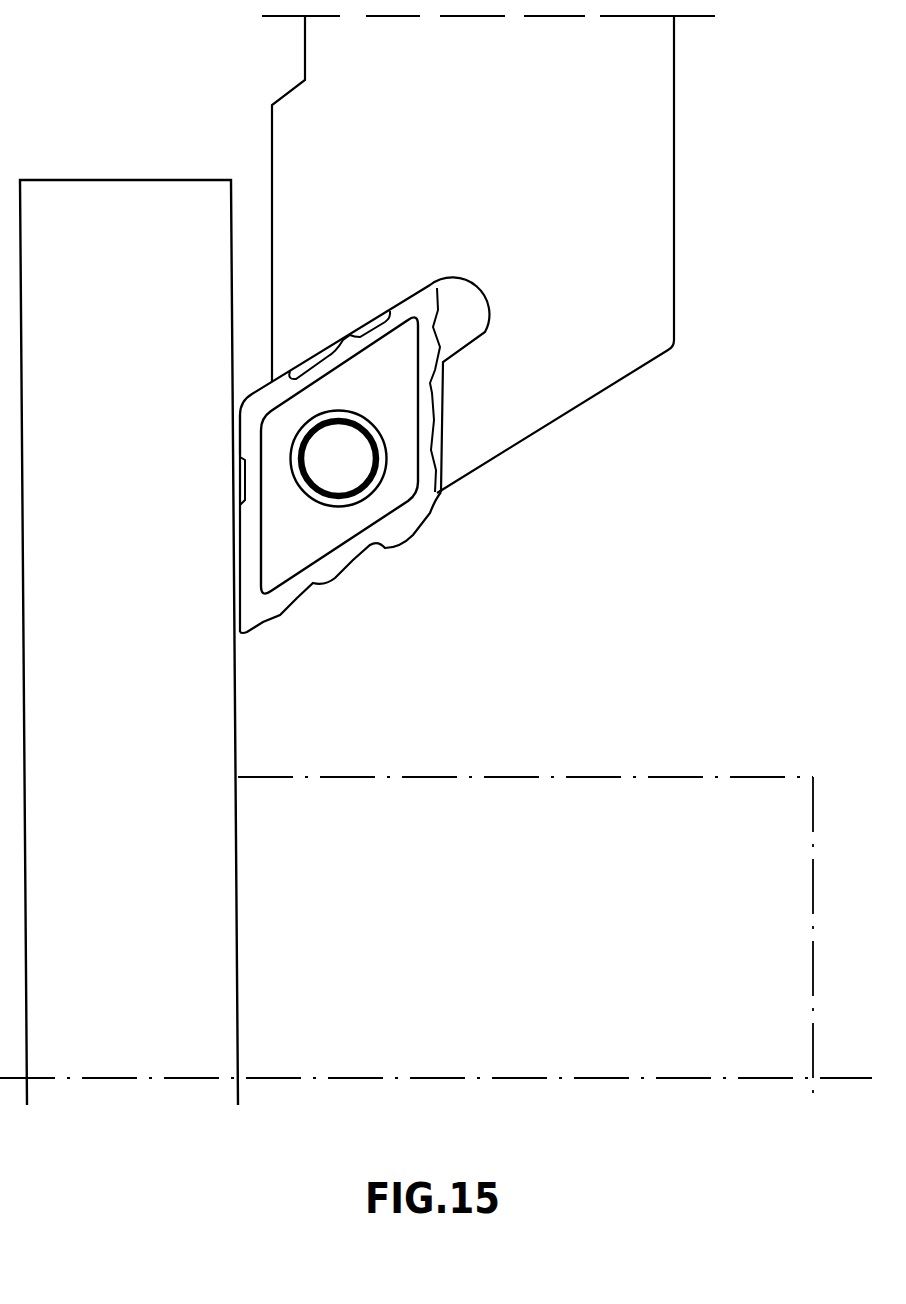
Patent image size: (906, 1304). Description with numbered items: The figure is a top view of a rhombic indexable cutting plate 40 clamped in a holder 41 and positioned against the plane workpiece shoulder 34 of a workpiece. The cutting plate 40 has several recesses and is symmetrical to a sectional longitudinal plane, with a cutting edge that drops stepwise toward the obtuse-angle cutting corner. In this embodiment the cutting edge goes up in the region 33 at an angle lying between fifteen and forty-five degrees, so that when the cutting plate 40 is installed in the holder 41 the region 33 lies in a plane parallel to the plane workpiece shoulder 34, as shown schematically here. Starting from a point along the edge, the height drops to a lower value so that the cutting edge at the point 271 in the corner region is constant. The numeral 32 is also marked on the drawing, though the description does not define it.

The plane workpiece shoulder 34 is at (230, 358).
The holder 41 is at (505, 148).
The point in the corner region 271 is at (240, 462).
The clamping surface 32 is at (237, 420).
The region 33 is at (237, 443).
The indexable cutting plate 40 is at (312, 548).